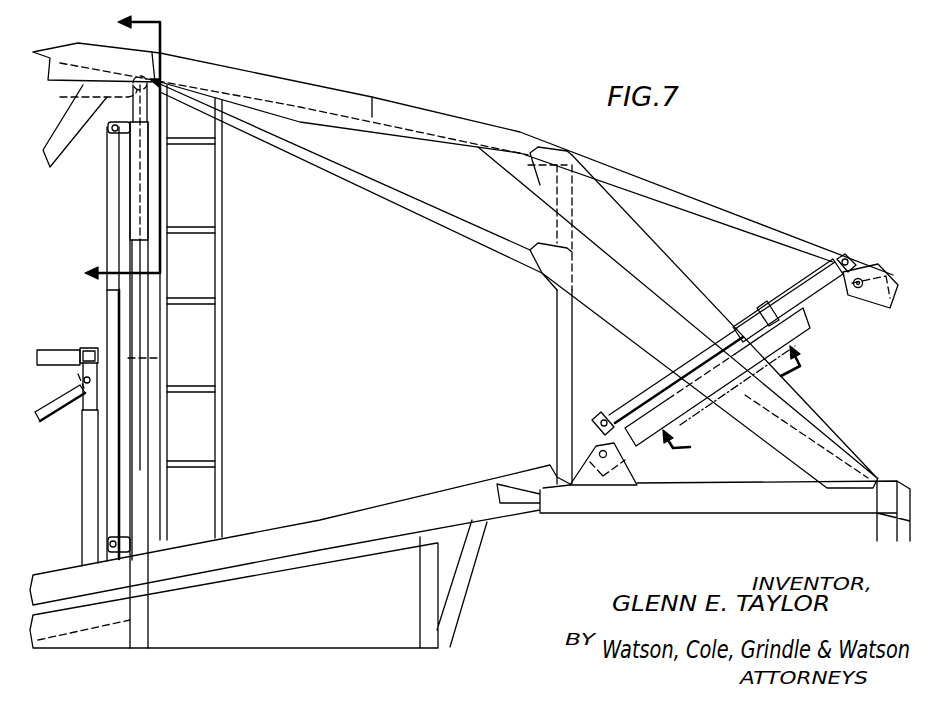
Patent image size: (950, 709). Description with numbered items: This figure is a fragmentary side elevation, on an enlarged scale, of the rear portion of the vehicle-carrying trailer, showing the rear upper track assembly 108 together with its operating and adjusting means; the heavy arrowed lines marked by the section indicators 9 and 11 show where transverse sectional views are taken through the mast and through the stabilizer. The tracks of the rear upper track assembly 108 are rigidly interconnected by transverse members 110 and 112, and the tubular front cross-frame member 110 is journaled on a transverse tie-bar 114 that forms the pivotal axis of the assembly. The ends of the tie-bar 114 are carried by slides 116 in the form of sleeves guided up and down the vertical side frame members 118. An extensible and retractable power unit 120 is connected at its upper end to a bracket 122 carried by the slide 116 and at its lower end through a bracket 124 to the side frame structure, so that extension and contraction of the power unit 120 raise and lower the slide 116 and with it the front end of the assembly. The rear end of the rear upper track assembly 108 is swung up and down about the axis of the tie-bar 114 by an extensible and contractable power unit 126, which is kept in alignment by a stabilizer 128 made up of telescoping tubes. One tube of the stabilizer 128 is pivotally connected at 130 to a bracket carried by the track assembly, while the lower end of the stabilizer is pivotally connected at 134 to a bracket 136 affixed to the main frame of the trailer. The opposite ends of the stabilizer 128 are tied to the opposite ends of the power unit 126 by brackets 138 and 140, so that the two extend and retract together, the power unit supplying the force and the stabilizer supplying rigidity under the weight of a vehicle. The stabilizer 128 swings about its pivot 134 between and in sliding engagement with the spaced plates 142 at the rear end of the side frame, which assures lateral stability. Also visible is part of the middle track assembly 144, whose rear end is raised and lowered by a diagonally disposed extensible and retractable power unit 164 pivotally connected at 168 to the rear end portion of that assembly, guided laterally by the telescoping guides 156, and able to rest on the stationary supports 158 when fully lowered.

The section line 9- 9 is at (107, 150).
The section line 11- 11 is at (739, 405).
The rear upper track assembly 108 is at (463, 159).
The tubular front cross-frame member 110 is at (84, 126).
The transverse member 112 is at (871, 311).
The transverse tie-bar 114 is at (183, 62).
The slide 116 is at (102, 162).
The vertical side frame member 118 is at (102, 400).
The extensible and retractable power unit 120 is at (76, 344).
The bracket 122 is at (96, 147).
The bracket 124 is at (81, 547).
The extensible and contractable power unit 126 is at (726, 341).
The stabilizer 128 is at (717, 384).
The pivotal connection 130 is at (875, 270).
The pivot 134 is at (569, 453).
The bracket 136 is at (603, 500).
The bracket 138 is at (854, 238).
The bracket 140 is at (600, 401).
The spaced plates 142 is at (678, 317).
The middle track assembly 144 is at (65, 341).
The telescoping guides 156 is at (63, 405).
The stationary supports 158 is at (65, 488).
The extensible and retractable power unit 164 is at (57, 395).
The pivotal connection 168 is at (142, 369).